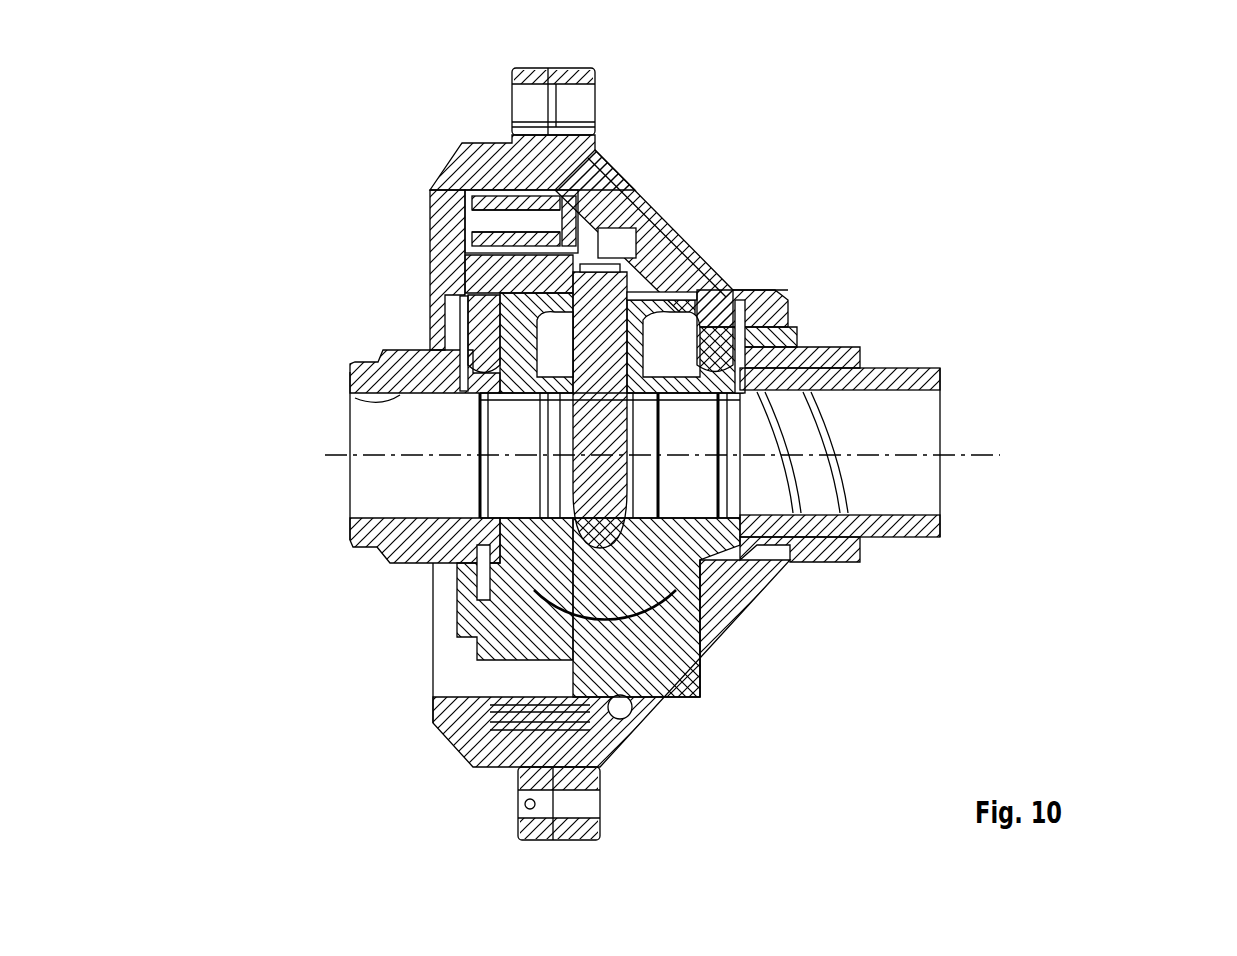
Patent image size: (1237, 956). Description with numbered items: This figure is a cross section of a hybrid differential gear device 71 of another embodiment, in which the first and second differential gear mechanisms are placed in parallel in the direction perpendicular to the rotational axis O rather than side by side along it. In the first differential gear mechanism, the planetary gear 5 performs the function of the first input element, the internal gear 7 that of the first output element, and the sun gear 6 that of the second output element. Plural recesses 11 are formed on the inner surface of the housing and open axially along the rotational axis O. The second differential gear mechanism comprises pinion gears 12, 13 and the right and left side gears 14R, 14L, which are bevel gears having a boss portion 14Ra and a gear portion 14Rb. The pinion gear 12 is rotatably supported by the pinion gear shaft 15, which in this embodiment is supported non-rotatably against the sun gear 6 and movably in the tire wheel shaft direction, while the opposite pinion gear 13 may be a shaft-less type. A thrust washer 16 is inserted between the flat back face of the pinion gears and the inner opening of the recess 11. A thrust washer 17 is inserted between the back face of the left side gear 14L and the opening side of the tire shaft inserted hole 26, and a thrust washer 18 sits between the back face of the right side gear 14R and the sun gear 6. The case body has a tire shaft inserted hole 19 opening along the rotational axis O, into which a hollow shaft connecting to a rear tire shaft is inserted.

The hybrid differential gear device 71 is at (852, 102).
The internal gear 7 is at (555, 165).
The planetary gear 5 is at (497, 203).
The sun gear 6 is at (490, 262).
The recess 11 is at (610, 238).
The tire shaft inserted hole 26 is at (400, 395).
The thrust washer 17 is at (500, 352).
The left side gear 14L is at (500, 568).
The right side gear 14R is at (715, 595).
The boss portion 14Ra is at (480, 563).
The gear portion 14Rb is at (505, 578).
The pinion gear shaft 15 is at (640, 268).
The pinion gear 13 is at (640, 600).
The thrust washer 16 is at (690, 290).
The pinion gear 12 is at (700, 323).
The thrust washer 18 is at (700, 365).
The tire shaft inserted hole 19 is at (895, 388).
The rotational axis O is at (977, 455).